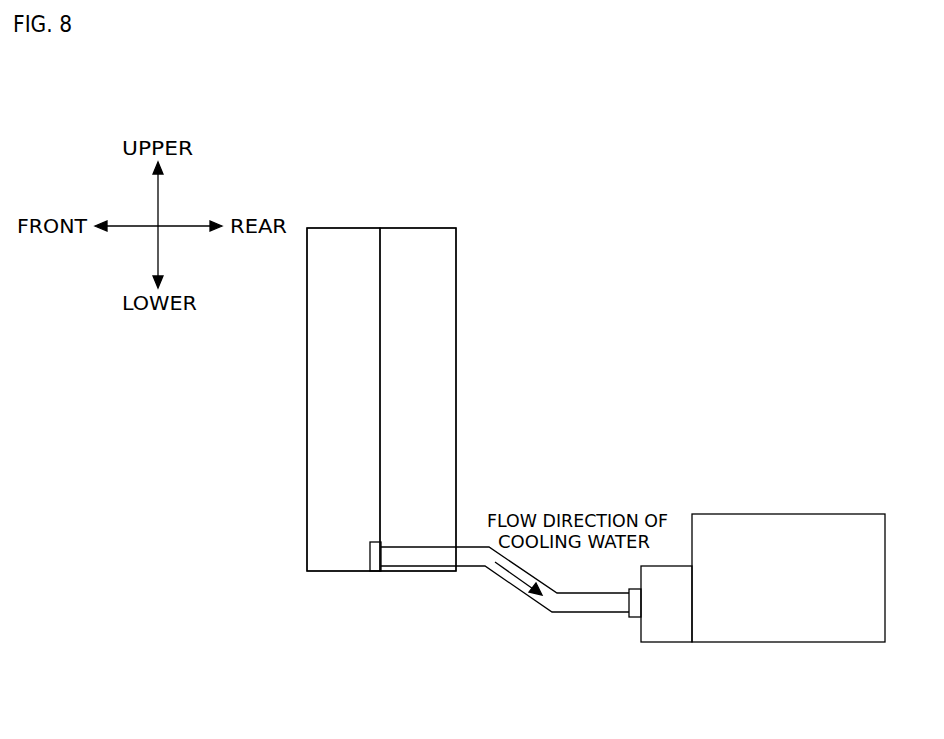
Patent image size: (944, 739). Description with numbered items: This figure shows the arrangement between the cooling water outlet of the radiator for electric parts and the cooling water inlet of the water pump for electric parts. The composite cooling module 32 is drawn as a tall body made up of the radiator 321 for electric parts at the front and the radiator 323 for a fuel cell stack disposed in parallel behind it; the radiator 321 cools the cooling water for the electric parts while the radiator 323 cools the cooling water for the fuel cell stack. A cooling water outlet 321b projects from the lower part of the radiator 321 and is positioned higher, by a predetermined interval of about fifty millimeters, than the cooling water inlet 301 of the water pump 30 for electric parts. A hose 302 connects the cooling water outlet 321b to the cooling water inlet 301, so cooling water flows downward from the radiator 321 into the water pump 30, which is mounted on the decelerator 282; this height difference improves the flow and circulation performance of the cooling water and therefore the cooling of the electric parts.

The composite cooling module 32 is at (459, 211).
The radiator for electric parts 321 is at (341, 228).
The radiator for a fuel cell stack 323 is at (448, 303).
The cooling water outlet 321b is at (372, 573).
The hose 302 is at (517, 590).
The cooling water inlet 301 is at (625, 620).
The water pump for electric parts 30 is at (662, 642).
The decelerator (28: driving unit) 282 is at (787, 642).